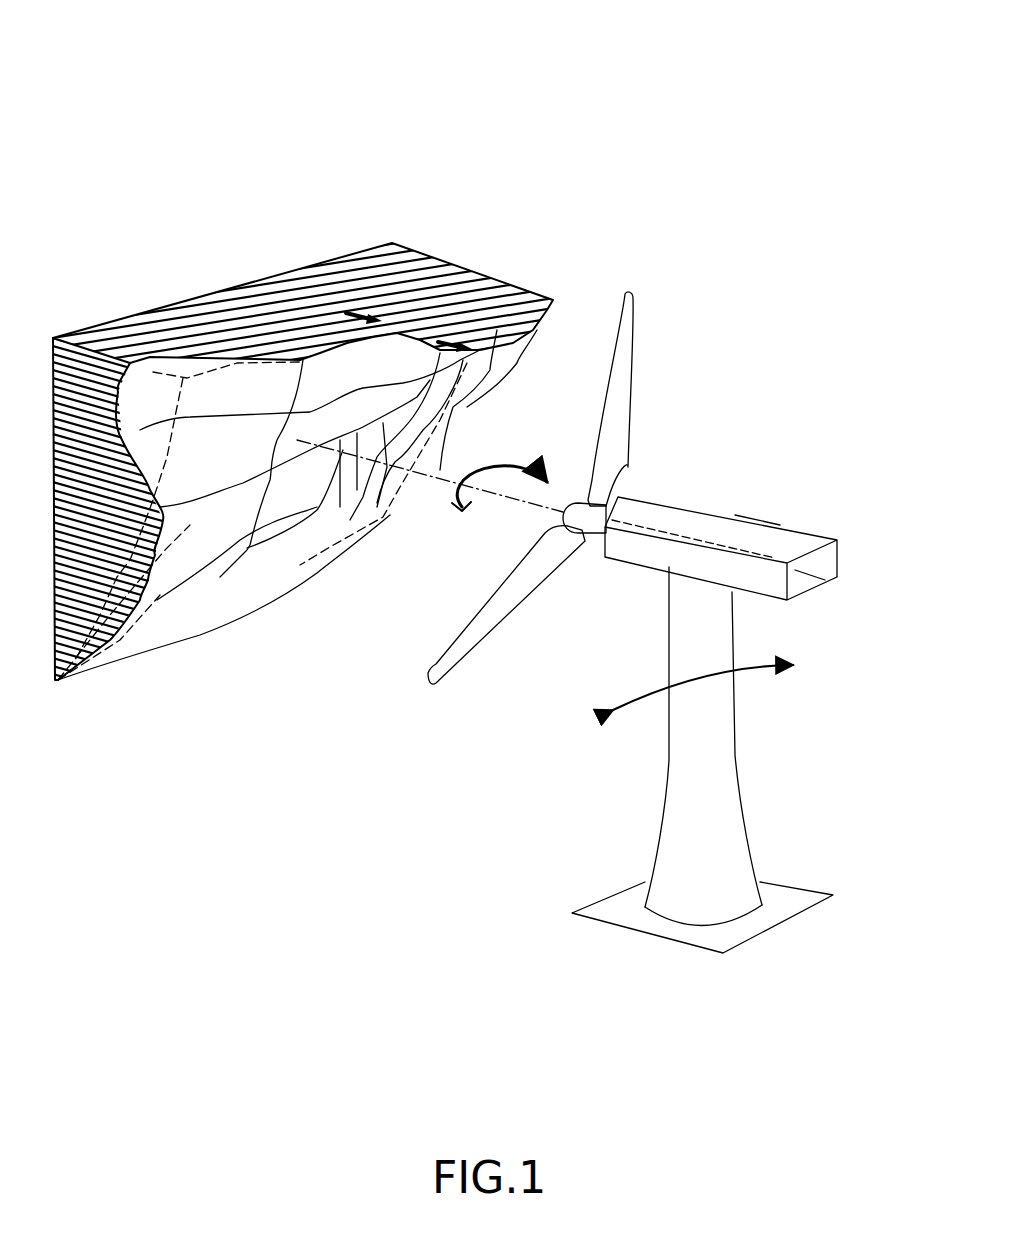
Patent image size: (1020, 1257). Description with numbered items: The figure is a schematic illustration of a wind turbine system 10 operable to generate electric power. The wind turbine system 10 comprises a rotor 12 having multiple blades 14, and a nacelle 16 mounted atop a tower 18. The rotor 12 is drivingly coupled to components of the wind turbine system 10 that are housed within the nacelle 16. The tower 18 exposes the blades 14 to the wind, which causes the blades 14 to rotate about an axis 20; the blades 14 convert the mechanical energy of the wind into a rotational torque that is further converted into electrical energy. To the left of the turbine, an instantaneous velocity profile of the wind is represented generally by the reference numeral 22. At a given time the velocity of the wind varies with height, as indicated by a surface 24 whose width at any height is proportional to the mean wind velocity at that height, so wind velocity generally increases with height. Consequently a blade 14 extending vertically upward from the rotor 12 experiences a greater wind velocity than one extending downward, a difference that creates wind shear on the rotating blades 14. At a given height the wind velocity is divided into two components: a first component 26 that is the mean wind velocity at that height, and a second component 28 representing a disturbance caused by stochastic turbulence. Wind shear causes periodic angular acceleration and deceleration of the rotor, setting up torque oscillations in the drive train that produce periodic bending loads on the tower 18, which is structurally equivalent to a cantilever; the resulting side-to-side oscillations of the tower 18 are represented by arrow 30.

The wind turbine system 10 is at (660, 478).
The rotor 12 is at (577, 503).
The blades 14 is at (617, 404).
The nacelle 16 is at (810, 544).
The tower 18 is at (717, 700).
The axis 20 is at (433, 478).
The instantaneous velocity profile of the wind 22 is at (168, 270).
The surface 24 is at (110, 615).
The first component 26 is at (313, 297).
The second component 28 is at (425, 315).
The arrow 30 is at (710, 677).